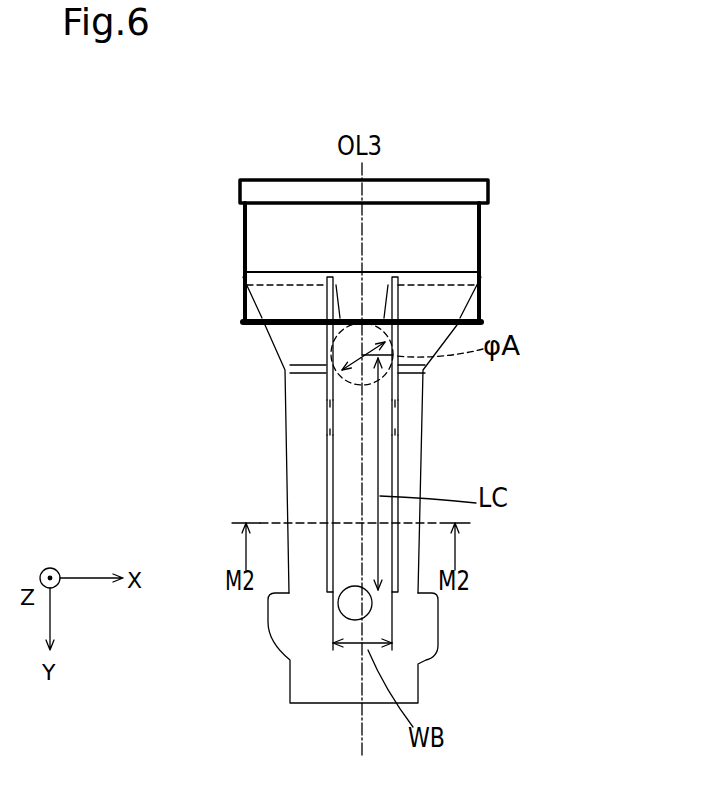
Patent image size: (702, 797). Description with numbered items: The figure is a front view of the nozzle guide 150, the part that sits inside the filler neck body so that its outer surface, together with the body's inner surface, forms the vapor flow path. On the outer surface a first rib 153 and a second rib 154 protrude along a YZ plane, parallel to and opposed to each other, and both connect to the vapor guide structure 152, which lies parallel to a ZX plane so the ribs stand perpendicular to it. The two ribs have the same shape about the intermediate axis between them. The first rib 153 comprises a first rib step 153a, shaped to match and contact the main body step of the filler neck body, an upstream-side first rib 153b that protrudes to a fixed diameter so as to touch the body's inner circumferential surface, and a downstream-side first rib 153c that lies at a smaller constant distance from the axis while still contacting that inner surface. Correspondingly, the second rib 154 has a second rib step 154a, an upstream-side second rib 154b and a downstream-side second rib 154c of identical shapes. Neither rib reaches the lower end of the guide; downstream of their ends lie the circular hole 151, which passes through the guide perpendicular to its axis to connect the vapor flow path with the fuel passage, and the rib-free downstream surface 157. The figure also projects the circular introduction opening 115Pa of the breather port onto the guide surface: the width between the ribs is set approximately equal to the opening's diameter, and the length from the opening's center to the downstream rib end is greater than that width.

The nozzle guide 150 is at (470, 135).
The circular hole 151 is at (372, 605).
The vapor guide structure 152 is at (358, 320).
The first rib 153 is at (229, 434).
The first rib step 153a is at (330, 420).
The upstream-side first rib 153b is at (327, 383).
The downstream-side first rib 153c is at (327, 463).
The second rib 154 is at (492, 434).
The second rib step 154a is at (396, 421).
The upstream-side second rib 154b is at (398, 383).
The downstream-side second rib 154c is at (398, 463).
The downstream surface 157 is at (337, 670).
The introduction opening 115Pa is at (342, 337).